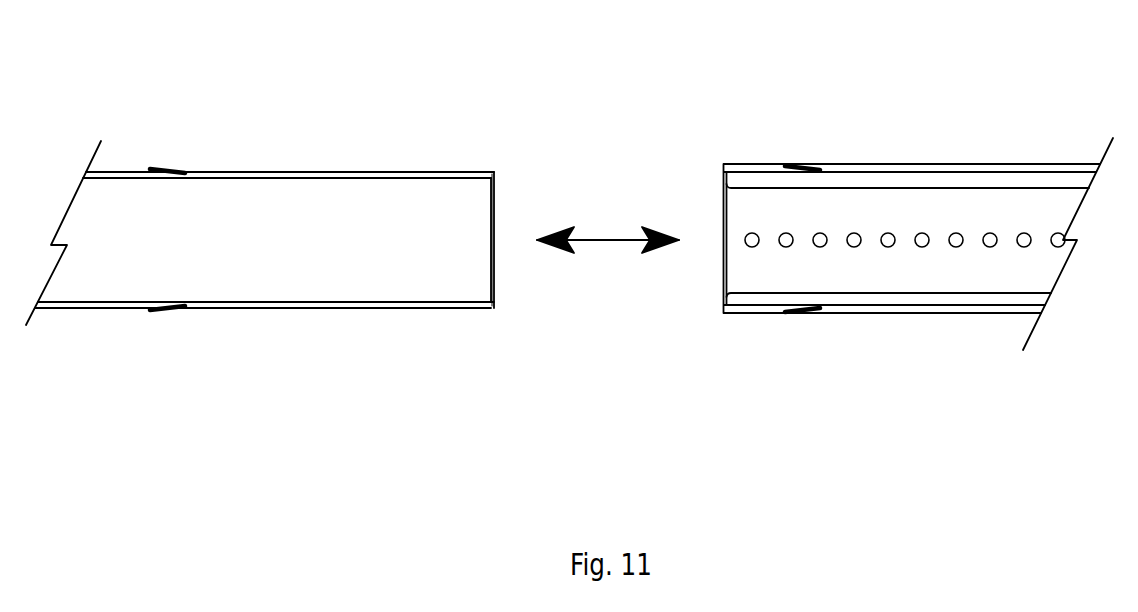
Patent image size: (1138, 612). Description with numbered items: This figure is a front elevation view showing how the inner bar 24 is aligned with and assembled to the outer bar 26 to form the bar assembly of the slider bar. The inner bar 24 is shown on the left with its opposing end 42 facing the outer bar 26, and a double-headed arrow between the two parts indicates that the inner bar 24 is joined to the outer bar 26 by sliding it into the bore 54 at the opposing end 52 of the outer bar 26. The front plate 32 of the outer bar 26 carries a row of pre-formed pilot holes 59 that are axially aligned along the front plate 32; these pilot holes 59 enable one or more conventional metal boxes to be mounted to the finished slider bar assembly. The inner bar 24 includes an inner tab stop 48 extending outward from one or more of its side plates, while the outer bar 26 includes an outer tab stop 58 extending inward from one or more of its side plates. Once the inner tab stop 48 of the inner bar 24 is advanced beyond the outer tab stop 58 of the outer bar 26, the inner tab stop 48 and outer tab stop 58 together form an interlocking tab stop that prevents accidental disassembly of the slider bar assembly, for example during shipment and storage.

The inner bar 24 is at (290, 172).
The outer bar 26 is at (914, 165).
The front plate 32 is at (1018, 226).
The opposing end 42 is at (494, 200).
The inner tab stop 48 is at (170, 172).
The opposing end 52 is at (730, 274).
The bore 54 is at (746, 203).
The outer tab stop 58 is at (817, 165).
The pilot holes 59 is at (888, 247).